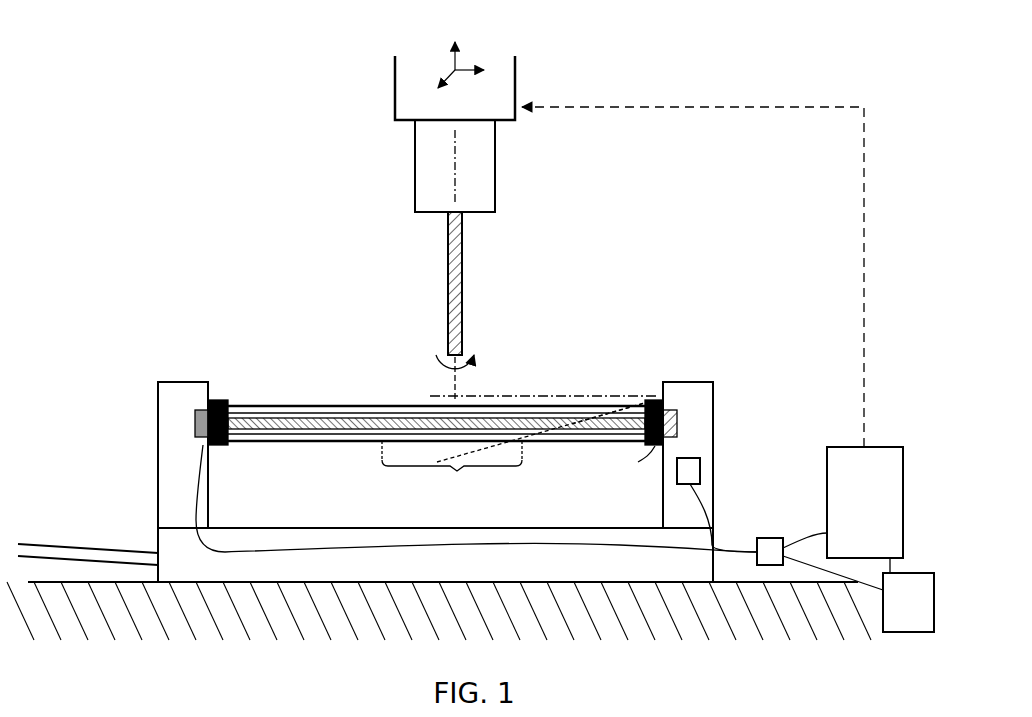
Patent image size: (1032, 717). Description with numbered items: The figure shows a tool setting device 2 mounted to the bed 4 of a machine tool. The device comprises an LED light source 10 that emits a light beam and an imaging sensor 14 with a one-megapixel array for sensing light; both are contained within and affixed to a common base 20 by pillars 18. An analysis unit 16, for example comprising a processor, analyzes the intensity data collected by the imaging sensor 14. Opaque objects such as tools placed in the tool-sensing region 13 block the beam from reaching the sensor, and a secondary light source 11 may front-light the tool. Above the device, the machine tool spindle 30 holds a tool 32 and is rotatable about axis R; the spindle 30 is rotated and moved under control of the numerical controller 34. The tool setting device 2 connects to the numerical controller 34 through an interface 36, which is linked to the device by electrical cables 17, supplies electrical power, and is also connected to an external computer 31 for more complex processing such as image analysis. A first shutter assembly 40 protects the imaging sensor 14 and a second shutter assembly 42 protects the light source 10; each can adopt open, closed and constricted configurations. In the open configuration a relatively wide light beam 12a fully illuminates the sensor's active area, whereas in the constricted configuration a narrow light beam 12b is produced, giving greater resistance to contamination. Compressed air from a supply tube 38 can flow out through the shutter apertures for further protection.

The tool setting device 2 is at (742, 340).
The bed 4 is at (461, 622).
The LED light source 10 is at (203, 410).
The secondary light source 11 is at (650, 402).
The wide light beam 12a is at (340, 406).
The narrow light beam 12b is at (270, 410).
The tool-sensing region 13 is at (515, 453).
The imaging sensor 14 is at (670, 410).
The analysis unit 16 is at (705, 470).
The electrical cables 17 is at (736, 545).
The pillars 18 is at (168, 472).
The common base 20 is at (456, 569).
The spindle 30 is at (497, 195).
The external computer 31 is at (894, 616).
The tool 32 is at (464, 296).
The numerical controller (NC) 34 is at (851, 531).
The interface 36 is at (772, 538).
The compressed air supply tube 38 is at (48, 549).
The first shutter assembly 40 is at (655, 446).
The second shutter assembly 42 is at (220, 400).